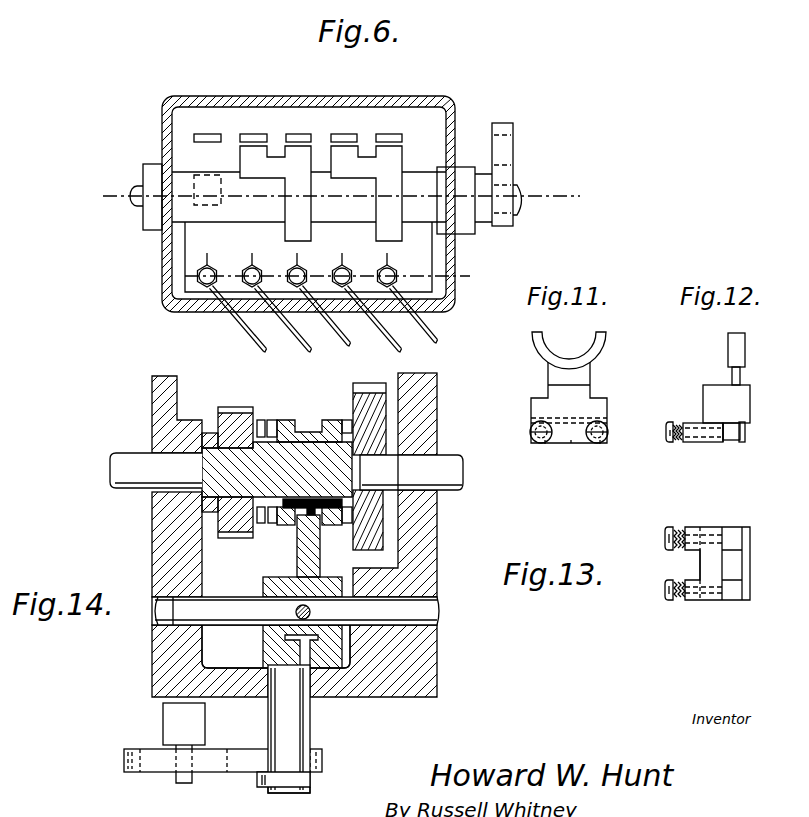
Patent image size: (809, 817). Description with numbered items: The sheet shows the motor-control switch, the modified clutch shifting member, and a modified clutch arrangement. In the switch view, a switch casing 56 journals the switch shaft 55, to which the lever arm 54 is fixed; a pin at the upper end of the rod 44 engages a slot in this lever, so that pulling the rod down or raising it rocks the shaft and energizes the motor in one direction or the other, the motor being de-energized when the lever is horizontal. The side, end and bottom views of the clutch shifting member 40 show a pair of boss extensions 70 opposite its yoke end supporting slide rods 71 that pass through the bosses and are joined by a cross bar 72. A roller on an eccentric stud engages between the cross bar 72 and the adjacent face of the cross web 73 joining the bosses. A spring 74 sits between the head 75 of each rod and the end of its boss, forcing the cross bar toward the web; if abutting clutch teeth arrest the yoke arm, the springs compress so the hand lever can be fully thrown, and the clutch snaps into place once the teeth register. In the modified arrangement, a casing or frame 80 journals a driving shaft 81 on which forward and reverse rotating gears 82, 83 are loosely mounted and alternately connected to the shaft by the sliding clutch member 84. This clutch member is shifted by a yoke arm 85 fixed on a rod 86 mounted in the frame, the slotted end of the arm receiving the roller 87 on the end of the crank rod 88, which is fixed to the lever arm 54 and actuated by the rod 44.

In FIG. 6, the switch casing 56 is at (453, 122).
In FIG. 6, the lever arm 54 is at (508, 168).
In FIG. 14, the lever arm 54 is at (218, 752).
In FIG. 6, the switch shaft 55 is at (522, 186).
In FIG. 11, the clutch shifting member 40 is at (585, 390).
In FIG. 12, the clutch shifting member 40 is at (712, 403).
In FIG. 13, the clutch shifting member 40 is at (712, 540).
In FIG. 11, the head 75 is at (604, 432).
In FIG. 12, the head 75 is at (667, 431).
In FIG. 13, the head 75 is at (665, 532).
In FIG. 11, the slide rods 71 is at (547, 443).
In FIG. 12, the slide rods 71 is at (731, 442).
In FIG. 13, the slide rods 71 is at (733, 541).
In FIG. 11, the cross web 73 is at (571, 443).
In FIG. 12, the cross web 73 is at (722, 443).
In FIG. 13, the cross web 73 is at (720, 563).
In FIG. 12, the boss extensions 70 is at (695, 443).
In FIG. 13, the boss extensions 70 is at (693, 535).
In FIG. 12, the cross bar 72 is at (746, 433).
In FIG. 13, the cross bar 72 is at (745, 562).
In FIG. 12, the spring 74 is at (679, 427).
In FIG. 13, the spring 74 is at (680, 527).
In FIG. 14, the casing or frame 80 is at (432, 525).
In FIG. 14, the driving shaft 81 is at (450, 473).
In FIG. 14, the forward rotating gear 82 is at (226, 405).
In FIG. 14, the reverse rotating gear 83 is at (368, 383).
In FIG. 14, the sliding clutch member 84 is at (300, 425).
In FIG. 14, the yoke arm 85 is at (300, 554).
In FIG. 14, the rod 86 is at (428, 610).
In FIG. 14, the roller 87 is at (276, 646).
In FIG. 14, the crank rod 88 is at (300, 722).
In FIG. 14, the rod 44 is at (167, 717).